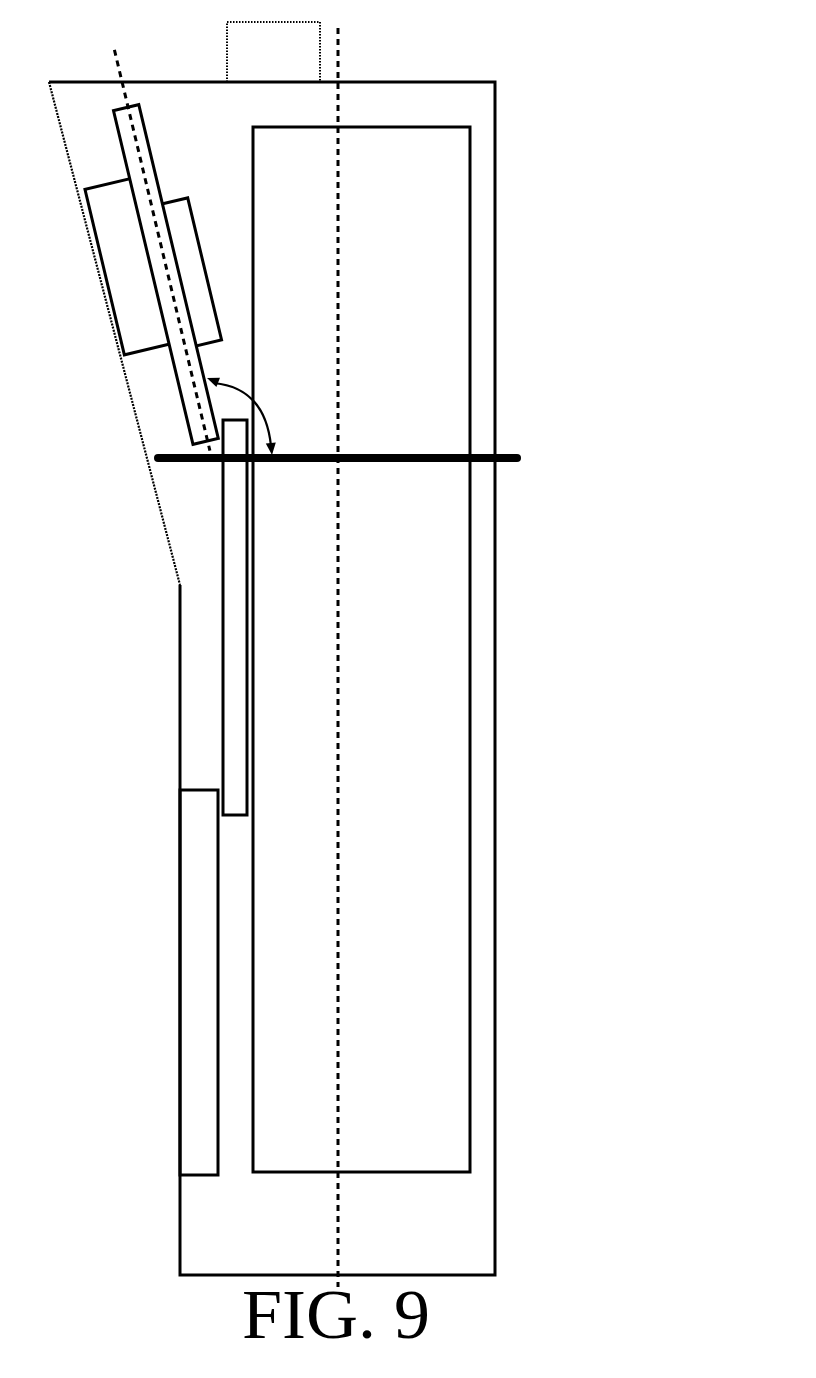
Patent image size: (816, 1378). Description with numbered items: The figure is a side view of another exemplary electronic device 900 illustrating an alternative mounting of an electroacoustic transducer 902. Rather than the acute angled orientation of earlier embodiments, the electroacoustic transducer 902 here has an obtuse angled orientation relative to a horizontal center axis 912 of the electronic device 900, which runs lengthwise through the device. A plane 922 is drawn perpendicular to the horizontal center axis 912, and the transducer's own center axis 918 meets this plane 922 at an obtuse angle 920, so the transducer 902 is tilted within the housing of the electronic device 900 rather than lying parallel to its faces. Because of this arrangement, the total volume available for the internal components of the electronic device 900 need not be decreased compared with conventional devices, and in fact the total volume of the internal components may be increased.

The electronic device 900 is at (410, 116).
The electroacoustic transducer 902 is at (156, 277).
The horizontal center axis 912 is at (357, 53).
The center axis 918 is at (108, 64).
The obtuse angle 920 is at (268, 425).
The plane 922 is at (409, 443).